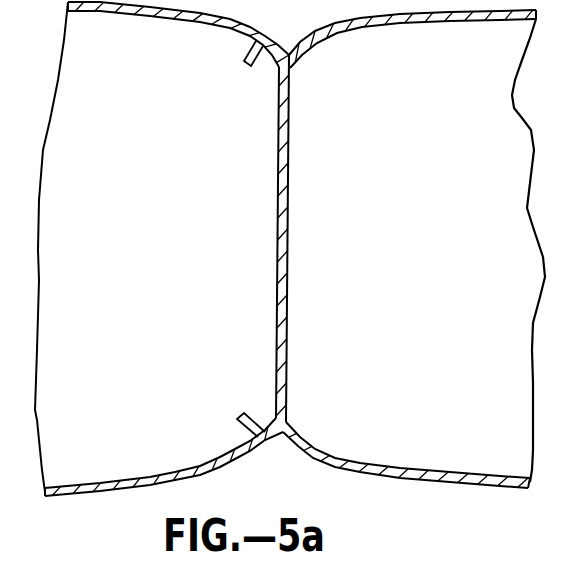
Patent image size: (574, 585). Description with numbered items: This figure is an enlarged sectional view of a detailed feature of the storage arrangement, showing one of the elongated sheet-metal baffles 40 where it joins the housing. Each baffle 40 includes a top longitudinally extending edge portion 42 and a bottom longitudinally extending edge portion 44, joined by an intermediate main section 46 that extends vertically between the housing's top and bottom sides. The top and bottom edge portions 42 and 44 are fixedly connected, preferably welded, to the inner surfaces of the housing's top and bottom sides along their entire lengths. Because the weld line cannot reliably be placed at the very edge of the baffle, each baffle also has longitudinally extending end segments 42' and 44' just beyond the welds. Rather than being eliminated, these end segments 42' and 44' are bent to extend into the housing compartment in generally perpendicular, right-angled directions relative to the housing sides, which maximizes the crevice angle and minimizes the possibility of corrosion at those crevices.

The baffle 40 is at (290, 249).
The top edge portion 42 is at (178, 62).
The end segment 42' is at (223, 66).
The bottom edge portion 44 is at (164, 432).
The end segment 44' is at (224, 433).
The intermediate main section 46 is at (288, 264).